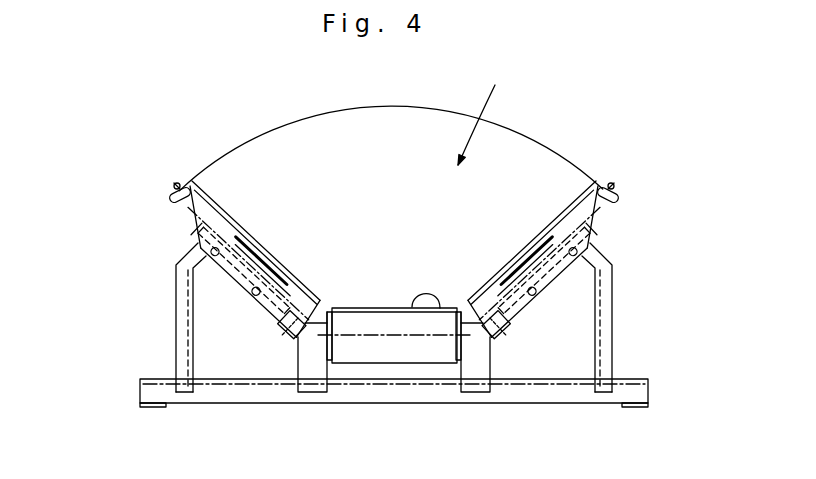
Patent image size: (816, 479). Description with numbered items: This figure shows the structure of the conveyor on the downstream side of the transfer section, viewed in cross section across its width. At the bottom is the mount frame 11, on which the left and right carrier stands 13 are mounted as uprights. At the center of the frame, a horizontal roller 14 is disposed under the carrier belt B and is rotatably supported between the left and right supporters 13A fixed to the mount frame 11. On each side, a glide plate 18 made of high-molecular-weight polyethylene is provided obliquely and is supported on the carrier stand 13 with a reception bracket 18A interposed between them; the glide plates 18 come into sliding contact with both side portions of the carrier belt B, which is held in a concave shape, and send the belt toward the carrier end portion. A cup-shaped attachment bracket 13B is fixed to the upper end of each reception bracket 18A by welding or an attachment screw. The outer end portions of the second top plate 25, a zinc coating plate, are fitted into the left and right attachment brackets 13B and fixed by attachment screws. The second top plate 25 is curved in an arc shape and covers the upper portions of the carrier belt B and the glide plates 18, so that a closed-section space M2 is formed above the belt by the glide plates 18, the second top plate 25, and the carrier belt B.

The mount frame 11 is at (583, 392).
The carrier stand 13 is at (182, 328).
The supporter 13A is at (312, 382).
The attachment bracket 13B is at (172, 198).
The horizontal roller 14 is at (375, 347).
The glide plate 18 is at (227, 200).
The reception bracket 18A is at (195, 222).
The second top plate 25 is at (402, 106).
The closed-section space M2 is at (486, 107).
The carrier belt B is at (440, 308).